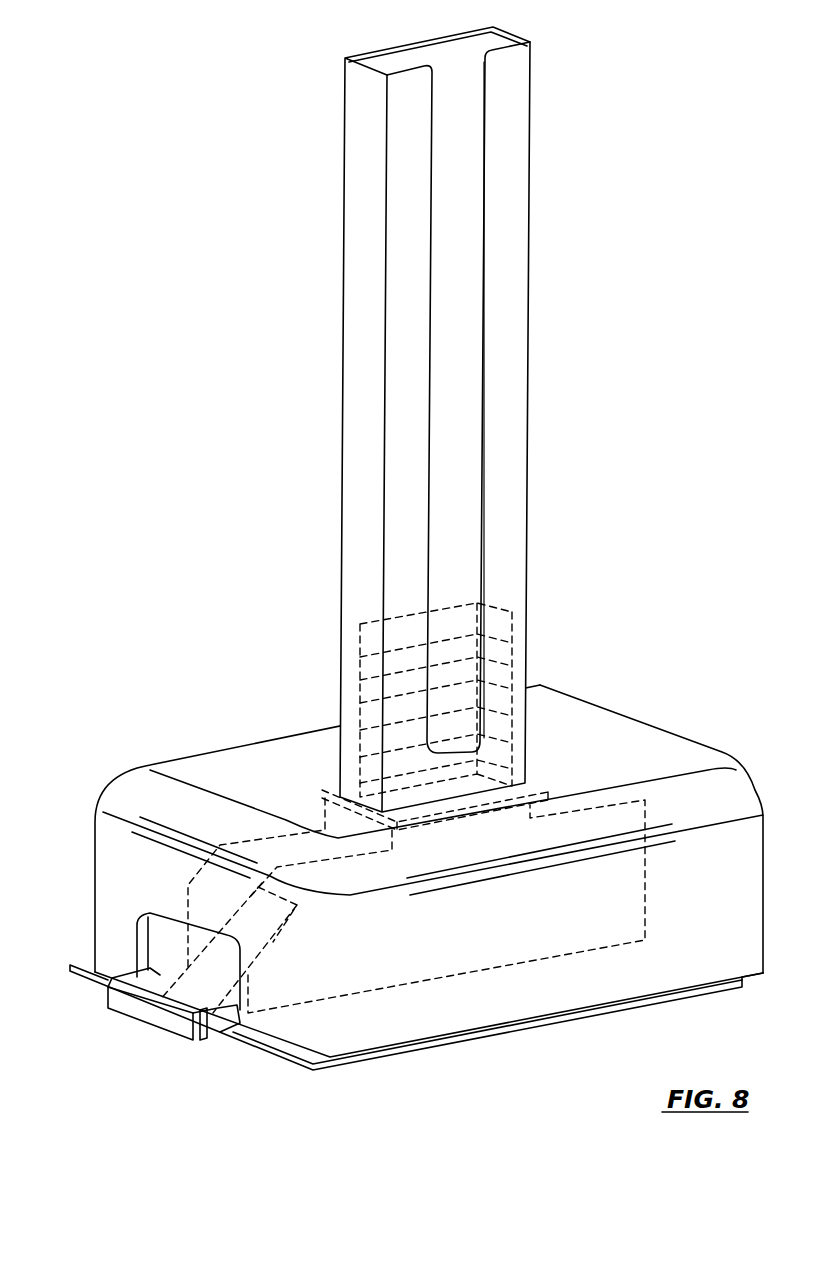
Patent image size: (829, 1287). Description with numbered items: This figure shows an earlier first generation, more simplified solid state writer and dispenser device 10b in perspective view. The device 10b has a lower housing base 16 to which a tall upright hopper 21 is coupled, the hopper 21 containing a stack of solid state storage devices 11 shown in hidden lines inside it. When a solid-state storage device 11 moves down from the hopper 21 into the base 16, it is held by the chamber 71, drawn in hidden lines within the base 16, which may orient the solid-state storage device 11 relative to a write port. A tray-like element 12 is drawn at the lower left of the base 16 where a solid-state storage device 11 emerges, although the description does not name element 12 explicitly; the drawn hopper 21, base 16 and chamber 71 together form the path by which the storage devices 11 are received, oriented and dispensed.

The first generation device 10b is at (416, 572).
The hopper 21 is at (342, 292).
The solid-state storage device 11 is at (490, 630).
The lower housing base 16 is at (638, 737).
The output tray 12 is at (135, 1005).
The chamber 71 is at (477, 818).